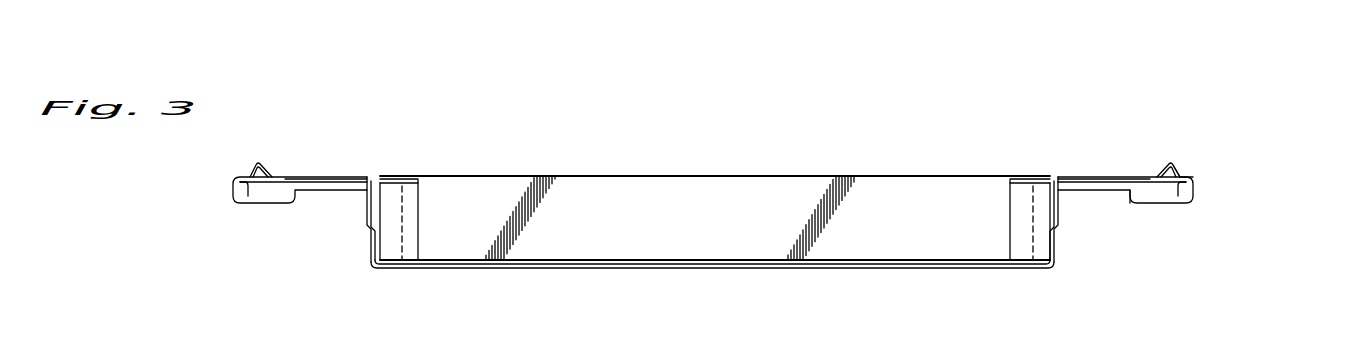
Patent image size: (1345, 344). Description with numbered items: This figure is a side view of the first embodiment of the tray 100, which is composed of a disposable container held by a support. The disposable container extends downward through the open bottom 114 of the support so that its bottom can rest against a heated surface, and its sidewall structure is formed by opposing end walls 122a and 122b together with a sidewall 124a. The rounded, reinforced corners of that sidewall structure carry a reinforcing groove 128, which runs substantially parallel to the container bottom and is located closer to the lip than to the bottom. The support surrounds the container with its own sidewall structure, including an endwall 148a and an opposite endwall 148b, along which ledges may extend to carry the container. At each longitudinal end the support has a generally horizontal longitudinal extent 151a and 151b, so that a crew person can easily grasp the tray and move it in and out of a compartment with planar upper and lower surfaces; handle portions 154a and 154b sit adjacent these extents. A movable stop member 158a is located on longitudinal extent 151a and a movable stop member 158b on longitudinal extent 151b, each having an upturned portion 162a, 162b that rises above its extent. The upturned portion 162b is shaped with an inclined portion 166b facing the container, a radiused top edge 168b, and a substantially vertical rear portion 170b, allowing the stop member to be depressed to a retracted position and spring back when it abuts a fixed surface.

The tray 100 is at (862, 133).
The open bottom 114 is at (448, 275).
The end wall 122a is at (380, 250).
The end wall 122b is at (1052, 250).
The sidewall 124a is at (908, 240).
The reinforcing groove 128 is at (398, 180).
The endwall 148a is at (363, 220).
The endwall 148b is at (1062, 218).
The longitudinal extent 151a is at (332, 177).
The longitudinal extent 151b is at (1137, 175).
The handle portion 154a is at (312, 177).
The handle portion 154b is at (1190, 177).
The movable stop member 158a is at (250, 168).
The movable stop member 158b is at (1168, 163).
The upturned portion 162a is at (258, 163).
The upturned portion 162b is at (1180, 172).
The inclined portion 166b is at (1160, 167).
The radiused top edge 168b is at (1173, 167).
The substantially vertical rear portion 170b is at (1182, 175).